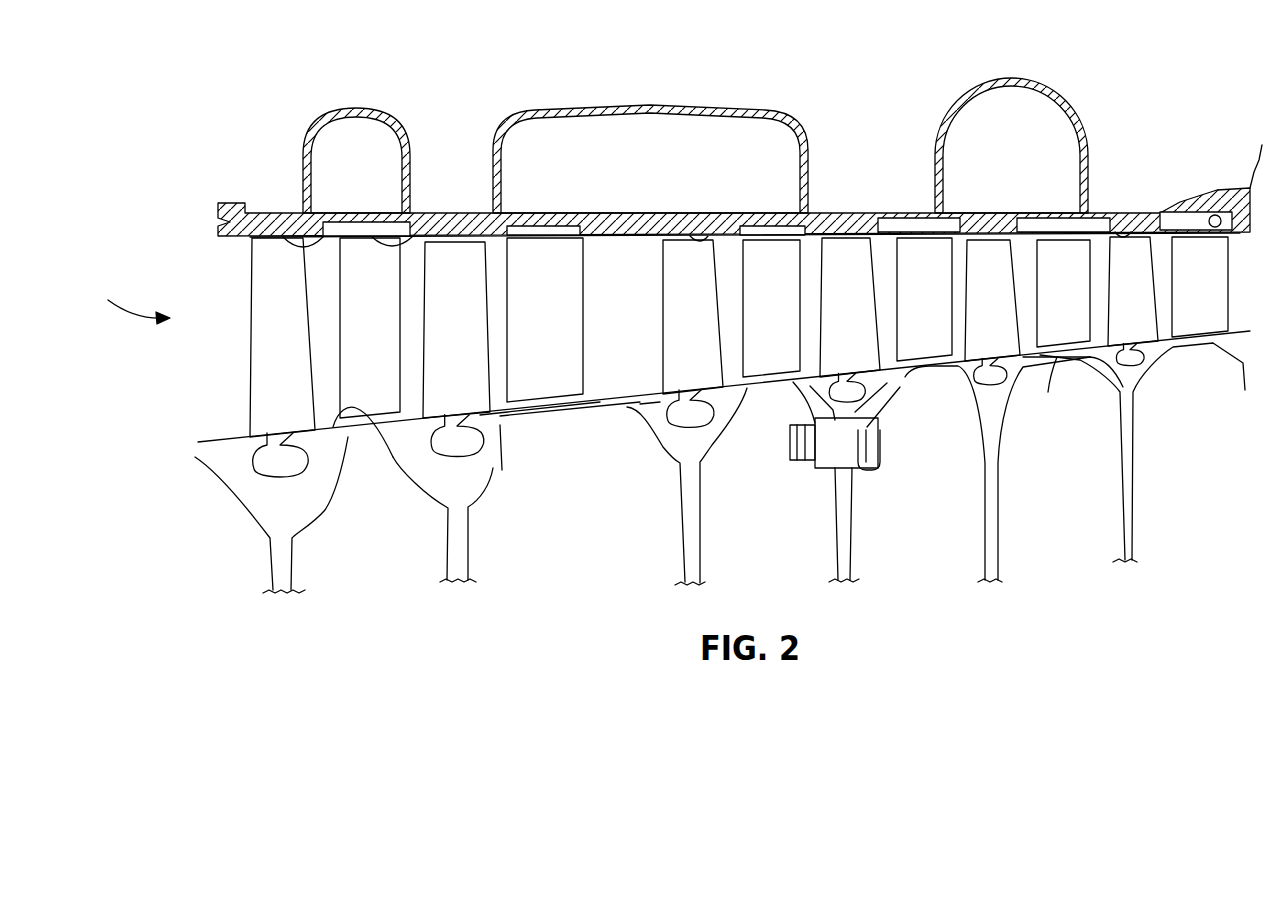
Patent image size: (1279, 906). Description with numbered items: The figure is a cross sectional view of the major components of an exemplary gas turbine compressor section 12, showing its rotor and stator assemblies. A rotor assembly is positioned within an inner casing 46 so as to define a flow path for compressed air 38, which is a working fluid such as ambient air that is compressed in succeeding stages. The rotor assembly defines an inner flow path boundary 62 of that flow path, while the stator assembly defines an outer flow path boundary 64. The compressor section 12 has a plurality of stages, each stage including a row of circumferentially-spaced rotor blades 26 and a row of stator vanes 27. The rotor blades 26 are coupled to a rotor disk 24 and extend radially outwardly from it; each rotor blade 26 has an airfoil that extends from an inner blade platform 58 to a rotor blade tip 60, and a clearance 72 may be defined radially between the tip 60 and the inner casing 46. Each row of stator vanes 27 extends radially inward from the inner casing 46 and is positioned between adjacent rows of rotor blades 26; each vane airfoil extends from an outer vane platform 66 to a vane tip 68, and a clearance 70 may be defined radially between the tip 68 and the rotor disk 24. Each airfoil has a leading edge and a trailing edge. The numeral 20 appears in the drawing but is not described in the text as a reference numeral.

The compressor section 12 is at (195, 113).
The rotor assembly 20 is at (523, 410).
The rotor disk 24 is at (242, 498).
The rotor blades 26 is at (264, 339).
The stator vanes 27 is at (349, 341).
The compressed air flow path 38 is at (122, 303).
The inner casing 46 is at (452, 213).
The inner blade platform 58 is at (247, 437).
The rotor blade tip 60 is at (270, 245).
The inner flow path boundary 62 is at (333, 423).
The outer flow path boundary 64 is at (295, 240).
The outer vane platform 66 is at (500, 223).
The vane tip 68 is at (540, 410).
The clearance 70 is at (767, 387).
The clearance 72 is at (698, 239).